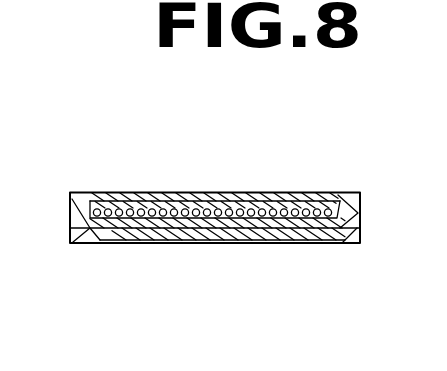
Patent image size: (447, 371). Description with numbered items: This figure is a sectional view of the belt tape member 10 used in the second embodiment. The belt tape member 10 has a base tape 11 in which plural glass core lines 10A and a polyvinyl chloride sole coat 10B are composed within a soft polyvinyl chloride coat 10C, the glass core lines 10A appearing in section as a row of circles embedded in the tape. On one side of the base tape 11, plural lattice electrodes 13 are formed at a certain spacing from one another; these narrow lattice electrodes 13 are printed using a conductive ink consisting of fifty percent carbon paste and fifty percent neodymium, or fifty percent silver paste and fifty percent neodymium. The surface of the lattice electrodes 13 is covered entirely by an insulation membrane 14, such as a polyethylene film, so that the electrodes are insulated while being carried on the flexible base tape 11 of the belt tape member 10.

The belt tape member 10 is at (78, 192).
The base tape 11 is at (320, 128).
The glass core lines 10A is at (243, 209).
The polyvinyl chloride sole coat 10B is at (307, 210).
The soft polyvinyl chloride coat 10C is at (187, 200).
The lattice electrodes 13 is at (277, 240).
The insulation membrane 14 is at (203, 243).